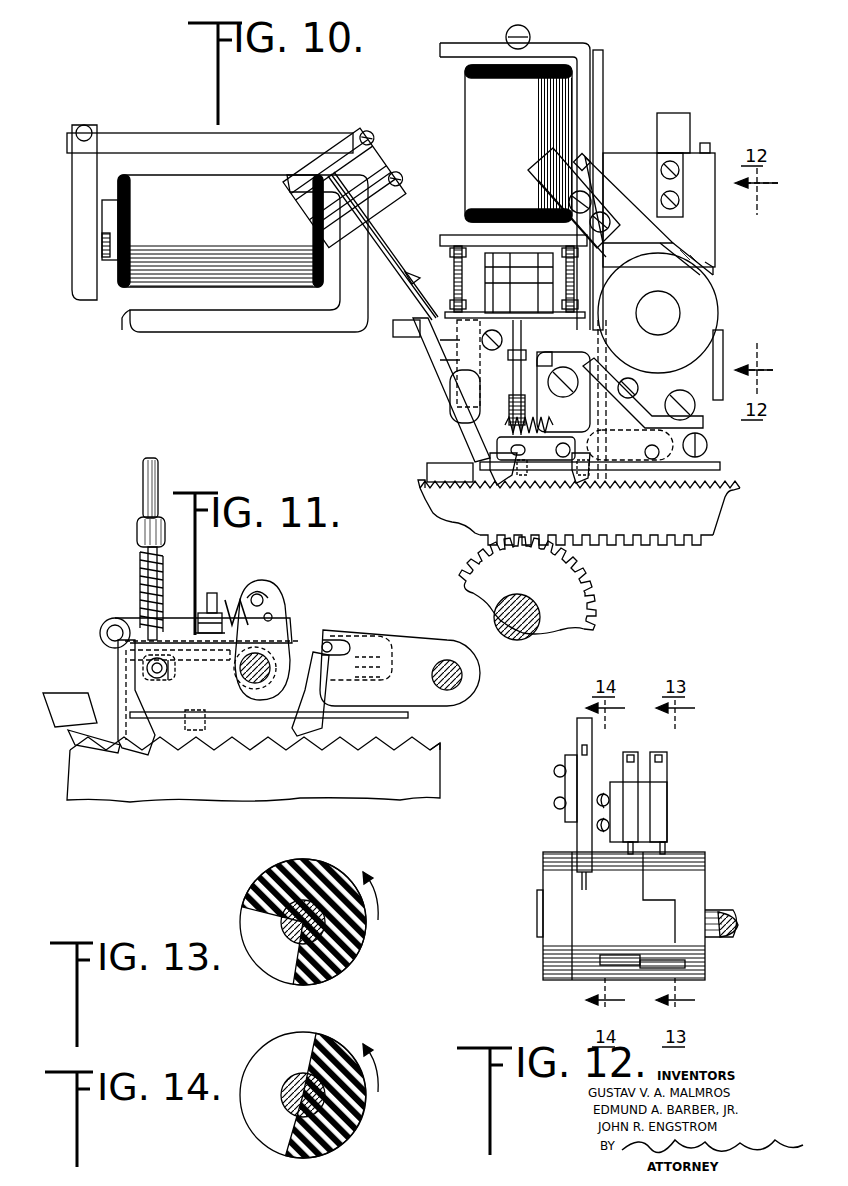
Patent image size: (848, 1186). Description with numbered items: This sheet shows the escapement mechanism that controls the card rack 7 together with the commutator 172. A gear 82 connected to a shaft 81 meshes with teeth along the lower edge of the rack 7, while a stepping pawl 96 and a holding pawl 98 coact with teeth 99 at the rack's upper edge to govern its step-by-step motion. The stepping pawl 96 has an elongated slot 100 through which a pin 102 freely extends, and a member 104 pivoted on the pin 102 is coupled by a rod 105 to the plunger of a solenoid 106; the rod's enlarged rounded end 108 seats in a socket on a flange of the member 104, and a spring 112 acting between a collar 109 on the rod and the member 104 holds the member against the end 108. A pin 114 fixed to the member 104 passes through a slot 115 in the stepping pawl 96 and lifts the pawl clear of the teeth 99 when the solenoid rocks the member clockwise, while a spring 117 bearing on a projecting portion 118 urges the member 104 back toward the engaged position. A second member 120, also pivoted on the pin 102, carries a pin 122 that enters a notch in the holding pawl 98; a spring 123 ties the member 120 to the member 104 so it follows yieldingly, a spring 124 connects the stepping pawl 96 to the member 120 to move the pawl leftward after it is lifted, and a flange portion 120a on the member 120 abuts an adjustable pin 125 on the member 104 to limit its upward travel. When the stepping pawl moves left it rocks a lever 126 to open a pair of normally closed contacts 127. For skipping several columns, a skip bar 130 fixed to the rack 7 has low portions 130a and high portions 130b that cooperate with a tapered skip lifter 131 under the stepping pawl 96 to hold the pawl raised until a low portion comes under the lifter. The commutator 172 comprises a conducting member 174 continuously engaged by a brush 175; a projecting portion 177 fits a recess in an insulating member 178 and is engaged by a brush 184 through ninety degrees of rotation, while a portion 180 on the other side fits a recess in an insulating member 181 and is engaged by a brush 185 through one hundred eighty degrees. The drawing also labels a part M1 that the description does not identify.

In FIG. 10, the rack 7 is at (628, 527).
In FIG. 11, the rack 7 is at (397, 780).
In FIG. 10, the shaft 81 is at (537, 608).
In FIG. 10, the gear 82 is at (597, 600).
In FIG. 10, the stepping pawl 96 is at (498, 486).
In FIG. 11, the stepping pawl 96 is at (137, 742).
In FIG. 10, the holding pawl 98 is at (585, 484).
In FIG. 11, the holding pawl 98 is at (320, 720).
In FIG. 10, the teeth 99 is at (420, 486).
In FIG. 11, the teeth 99 is at (426, 747).
In FIG. 11, the elongated slot 100 is at (278, 642).
In FIG. 11, the pin 102 is at (240, 676).
In FIG. 11, the member 104 is at (203, 620).
In FIG. 11, the rod 105 is at (143, 497).
In FIG. 10, the solenoid 106 is at (470, 114).
In FIG. 11, the enlarged rounded end 108 is at (140, 655).
In FIG. 11, the collar 109 is at (137, 536).
In FIG. 11, the spring 112 is at (140, 590).
In FIG. 11, the pin 114 is at (170, 676).
In FIG. 11, the slot 115 is at (147, 672).
In FIG. 11, the spring 117 is at (406, 665).
In FIG. 11, the projecting portion 118 is at (370, 636).
In FIG. 11, the member 120 is at (100, 633).
In FIG. 11, the flange portion 120a is at (207, 637).
In FIG. 11, the pin 122 is at (327, 655).
In FIG. 11, the spring 123 is at (252, 596).
In FIG. 11, the spring 124 is at (237, 628).
In FIG. 11, the adjustable pin 125 is at (208, 596).
In FIG. 10, the lever 126 is at (432, 360).
In FIG. 10, the contacts 127 is at (408, 275).
In FIG. 10, the skip bar 130 is at (455, 468).
In FIG. 11, the skip bar 130 is at (262, 735).
In FIG. 11, the low portion 130a is at (72, 743).
In FIG. 11, the high portion 130b is at (62, 700).
In FIG. 11, the skip lifter 131 is at (205, 722).
In FIG. 10, the commutator 172 is at (718, 306).
In FIG. 12, the commutator 172 is at (714, 864).
In FIG. 12, the conducting member 174 is at (634, 934).
In FIG. 12, the brush 175 is at (631, 857).
In FIG. 12, the projecting portion 177 is at (672, 925).
In FIG. 13, the projecting portion 177 is at (268, 967).
In FIG. 12, the insulating member 178 is at (696, 896).
In FIG. 13, the insulating member 178 is at (260, 888).
In FIG. 12, the portion 180 is at (566, 925).
In FIG. 14, the portion 180 is at (262, 1070).
In FIG. 12, the insulating member 181 is at (548, 852).
In FIG. 14, the insulating member 181 is at (350, 1120).
In FIG. 12, the brush 184 is at (668, 857).
In FIG. 10, the brush 185 is at (716, 266).
In FIG. 12, the brush 185 is at (580, 886).
In FIG. 10, the motor M1 is at (186, 290).